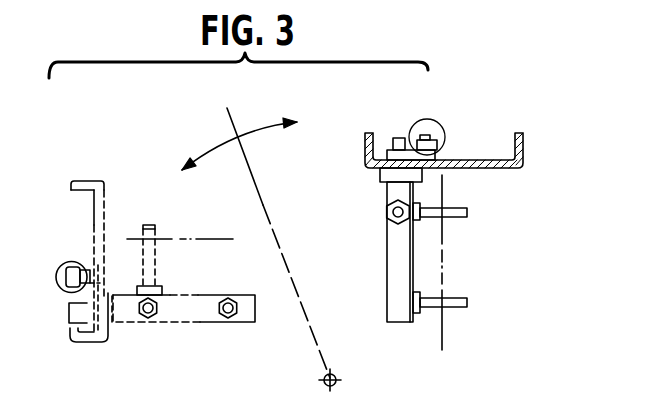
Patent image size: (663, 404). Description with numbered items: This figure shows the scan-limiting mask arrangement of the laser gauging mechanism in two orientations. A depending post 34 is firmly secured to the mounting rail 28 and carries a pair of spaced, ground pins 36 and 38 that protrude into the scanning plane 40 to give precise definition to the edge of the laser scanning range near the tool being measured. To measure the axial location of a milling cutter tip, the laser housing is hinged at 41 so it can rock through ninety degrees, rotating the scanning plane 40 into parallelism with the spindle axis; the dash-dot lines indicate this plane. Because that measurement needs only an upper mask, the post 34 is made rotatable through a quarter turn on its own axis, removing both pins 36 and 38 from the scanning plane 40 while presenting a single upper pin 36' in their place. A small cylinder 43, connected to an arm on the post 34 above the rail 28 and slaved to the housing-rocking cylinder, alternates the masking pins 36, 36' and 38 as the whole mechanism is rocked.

The rail 28 is at (525, 147).
The depending post 34 is at (203, 322).
The pin 36 is at (467, 204).
The upper pin 36' is at (186, 260).
The pin 38 is at (453, 298).
The scanning plane 40 is at (210, 238).
The hinge 41 is at (338, 377).
The small cylinder 43 is at (434, 128).